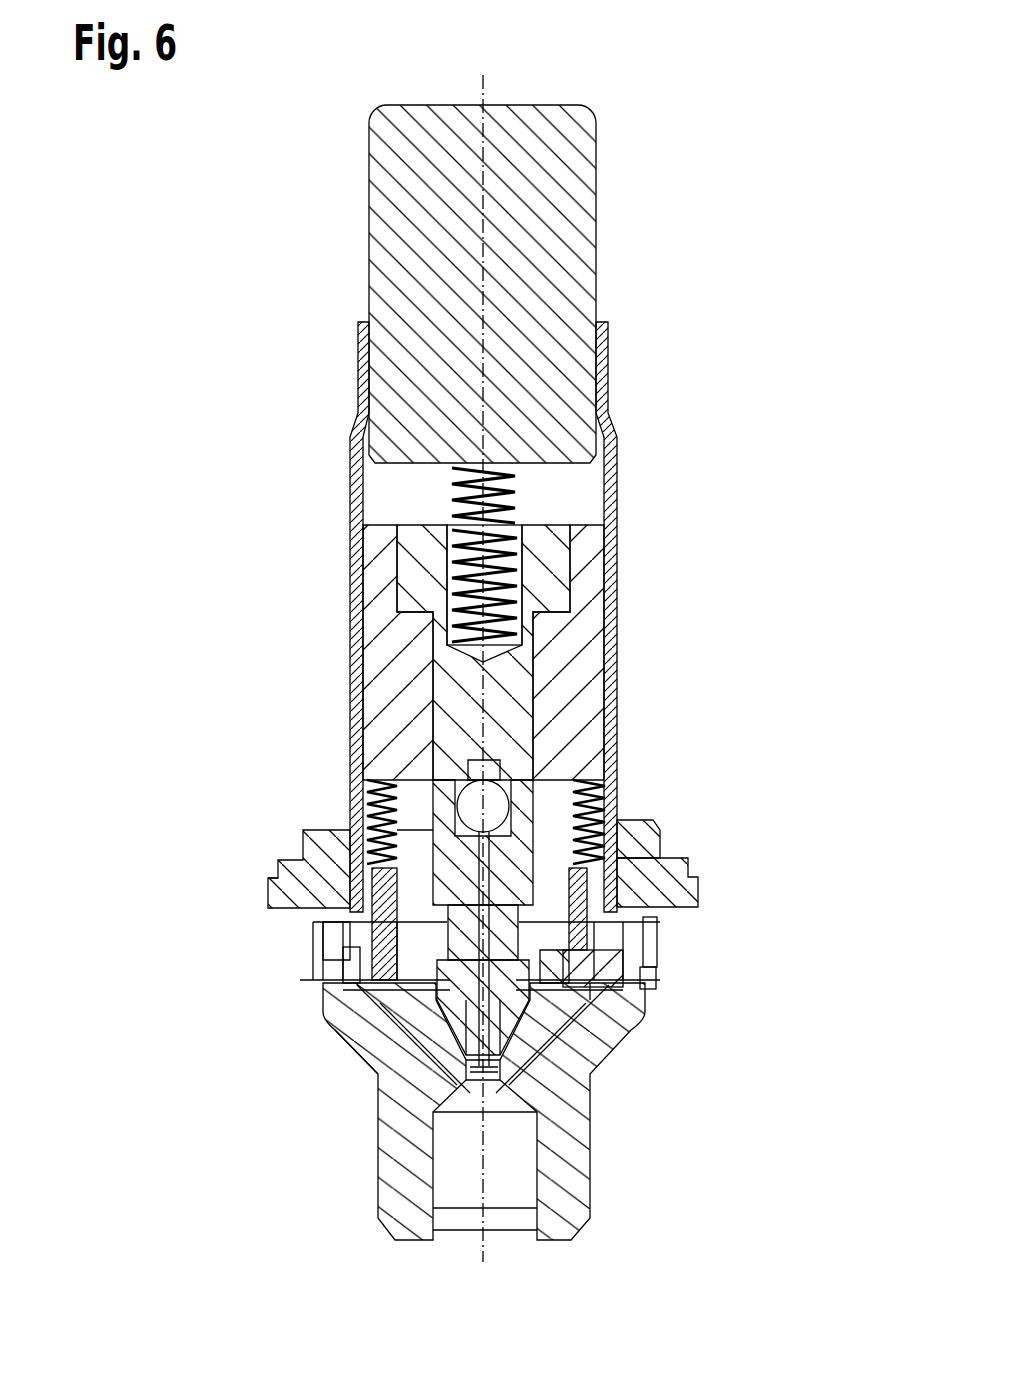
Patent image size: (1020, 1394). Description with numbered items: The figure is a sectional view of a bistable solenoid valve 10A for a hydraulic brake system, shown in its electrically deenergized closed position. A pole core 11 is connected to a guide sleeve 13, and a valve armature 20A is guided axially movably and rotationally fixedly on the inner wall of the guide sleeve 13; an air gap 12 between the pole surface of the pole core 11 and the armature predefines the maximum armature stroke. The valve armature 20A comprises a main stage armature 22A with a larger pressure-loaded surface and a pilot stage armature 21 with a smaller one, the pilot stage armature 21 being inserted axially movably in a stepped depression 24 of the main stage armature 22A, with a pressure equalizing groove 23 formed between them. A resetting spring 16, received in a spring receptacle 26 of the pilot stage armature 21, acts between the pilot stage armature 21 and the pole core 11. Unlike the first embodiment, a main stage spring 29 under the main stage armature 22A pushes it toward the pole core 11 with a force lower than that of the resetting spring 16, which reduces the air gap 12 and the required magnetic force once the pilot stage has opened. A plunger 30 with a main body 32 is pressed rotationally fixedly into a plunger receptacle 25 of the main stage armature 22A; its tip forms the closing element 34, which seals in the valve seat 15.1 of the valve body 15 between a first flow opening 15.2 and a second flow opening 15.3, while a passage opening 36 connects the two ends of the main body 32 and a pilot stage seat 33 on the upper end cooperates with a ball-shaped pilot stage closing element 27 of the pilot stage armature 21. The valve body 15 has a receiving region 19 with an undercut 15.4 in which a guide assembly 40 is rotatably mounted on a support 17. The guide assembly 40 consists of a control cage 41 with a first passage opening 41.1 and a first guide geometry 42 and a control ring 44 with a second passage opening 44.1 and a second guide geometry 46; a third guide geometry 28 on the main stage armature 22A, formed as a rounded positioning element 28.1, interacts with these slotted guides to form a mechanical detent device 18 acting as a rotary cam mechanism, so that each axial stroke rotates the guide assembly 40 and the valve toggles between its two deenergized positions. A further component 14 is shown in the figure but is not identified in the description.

The solenoid valve 10A is at (514, 672).
The pole core 11 is at (575, 156).
The air gap 12 is at (575, 489).
The guide sleeve 13 is at (352, 368).
The flange 14 is at (330, 832).
The valve body 15 is at (517, 1148).
The valve seat 15.1 is at (500, 1090).
The first flow opening 15.2 is at (456, 1200).
The second flow opening 15.3 is at (366, 1012).
The undercut 15.4 is at (590, 1000).
The resetting spring 16 is at (520, 531).
The support 17 is at (620, 990).
The mechanical detent device 18 is at (310, 905).
The receiving region 19 is at (655, 935).
The valve armature 20A is at (469, 790).
The pilot stage armature 21 is at (392, 563).
The main stage armature 22A is at (575, 632).
The pressure equalizing groove 23 is at (605, 688).
The stepped depression 24 is at (455, 684).
The plunger receptacle 25 is at (565, 830).
The spring receptacle 26 is at (523, 586).
The pilot stage closing element 27 is at (500, 790).
The third guide geometry 28 is at (555, 1000).
The positioning element 28.1 is at (585, 1005).
The main stage spring 29 is at (392, 790).
The plunger 30 is at (412, 768).
The main body 32 is at (405, 815).
The pilot stage seat 33 is at (495, 836).
The closing element 34 is at (440, 1075).
The passage opening 36 is at (335, 940).
The guide assembly 40 is at (523, 912).
The control cage 41 is at (695, 881).
The first passage opening 41.1 is at (290, 855).
The first guide geometry 42 is at (640, 852).
The control ring 44 is at (340, 960).
The second passage opening 44.1 is at (330, 985).
The second guide geometry 46 is at (610, 960).